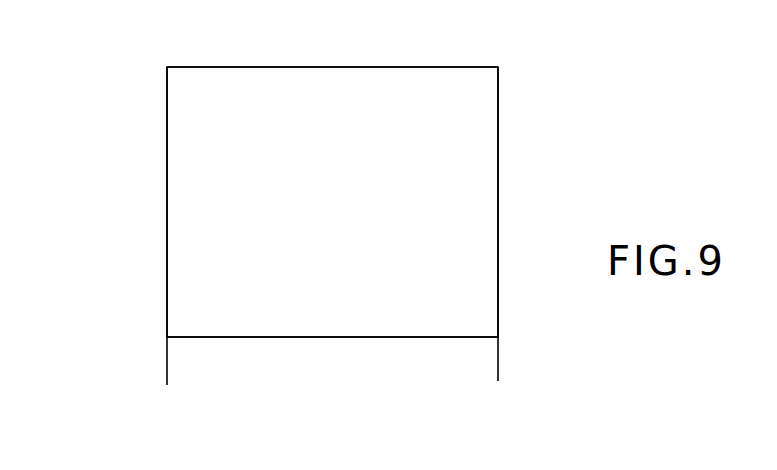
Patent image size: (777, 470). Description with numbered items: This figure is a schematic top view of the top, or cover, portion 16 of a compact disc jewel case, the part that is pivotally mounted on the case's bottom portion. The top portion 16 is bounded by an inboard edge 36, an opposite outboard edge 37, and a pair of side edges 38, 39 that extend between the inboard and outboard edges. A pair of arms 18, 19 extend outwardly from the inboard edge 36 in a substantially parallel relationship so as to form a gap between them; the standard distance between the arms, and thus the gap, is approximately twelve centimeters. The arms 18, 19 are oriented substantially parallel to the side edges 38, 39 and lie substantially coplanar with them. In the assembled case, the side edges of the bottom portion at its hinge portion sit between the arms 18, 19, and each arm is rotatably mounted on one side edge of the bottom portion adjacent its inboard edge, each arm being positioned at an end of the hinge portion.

The top portion 16 is at (530, 87).
The outboard edge 37 is at (257, 66).
The side edge 38 is at (166, 162).
The side edge 39 is at (499, 190).
The inboard edge 36 is at (358, 338).
The arm 18 is at (167, 370).
The arm 19 is at (499, 367).